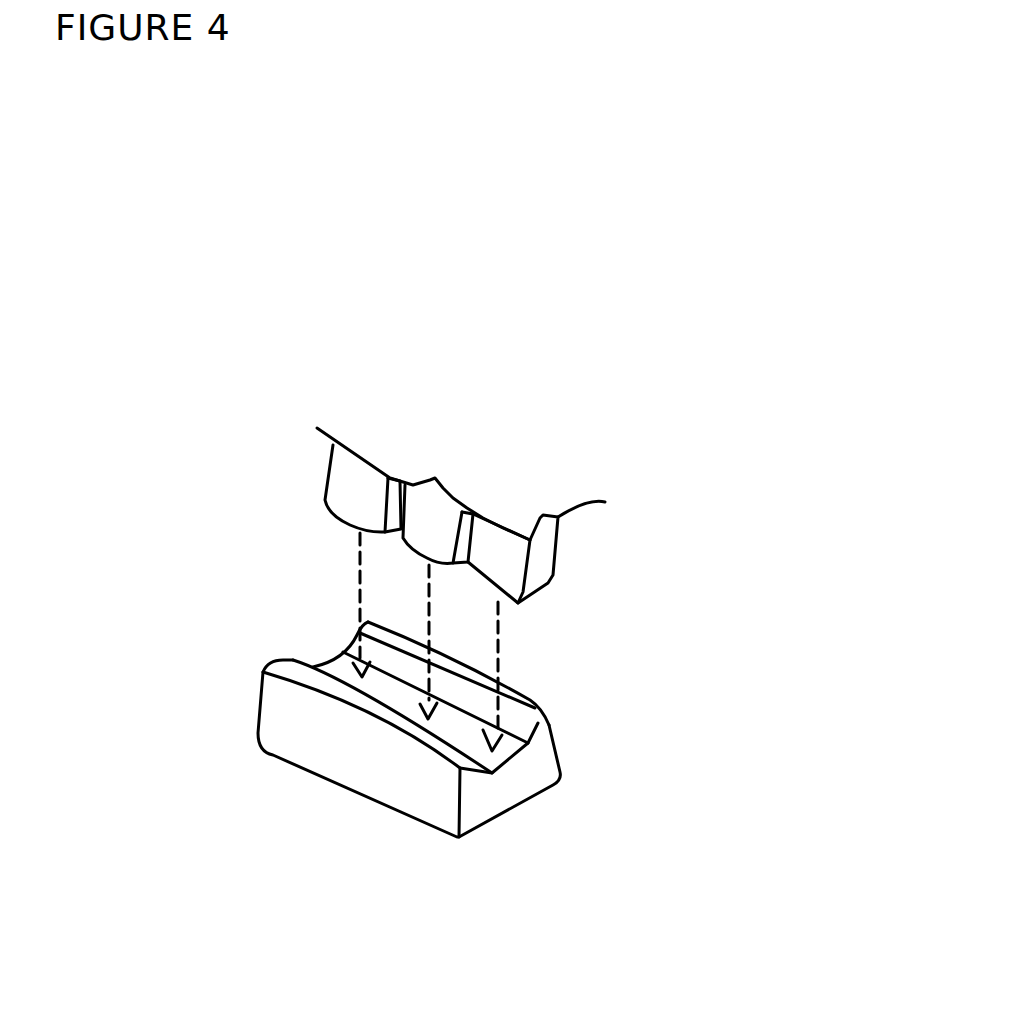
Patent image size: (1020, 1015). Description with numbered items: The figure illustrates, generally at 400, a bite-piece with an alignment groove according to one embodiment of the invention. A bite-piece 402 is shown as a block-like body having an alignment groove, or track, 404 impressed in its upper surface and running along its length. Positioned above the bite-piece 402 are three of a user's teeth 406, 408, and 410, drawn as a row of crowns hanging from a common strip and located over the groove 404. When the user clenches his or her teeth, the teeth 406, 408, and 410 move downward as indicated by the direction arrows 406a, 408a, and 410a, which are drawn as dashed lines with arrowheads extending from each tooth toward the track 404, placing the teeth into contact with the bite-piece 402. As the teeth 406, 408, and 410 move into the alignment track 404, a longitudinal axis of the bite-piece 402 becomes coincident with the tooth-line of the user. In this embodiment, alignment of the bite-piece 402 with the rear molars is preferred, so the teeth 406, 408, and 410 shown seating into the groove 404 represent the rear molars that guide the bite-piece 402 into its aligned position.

The bite-piece with alignment groove 400 is at (768, 160).
The bite-piece 402 is at (327, 763).
The alignment groove 404 is at (333, 660).
The tooth 406 is at (347, 484).
The direction arrow 406a is at (352, 576).
The tooth 408 is at (428, 515).
The direction arrow 408a is at (430, 600).
The tooth 410 is at (503, 553).
The direction arrow 410a is at (500, 662).